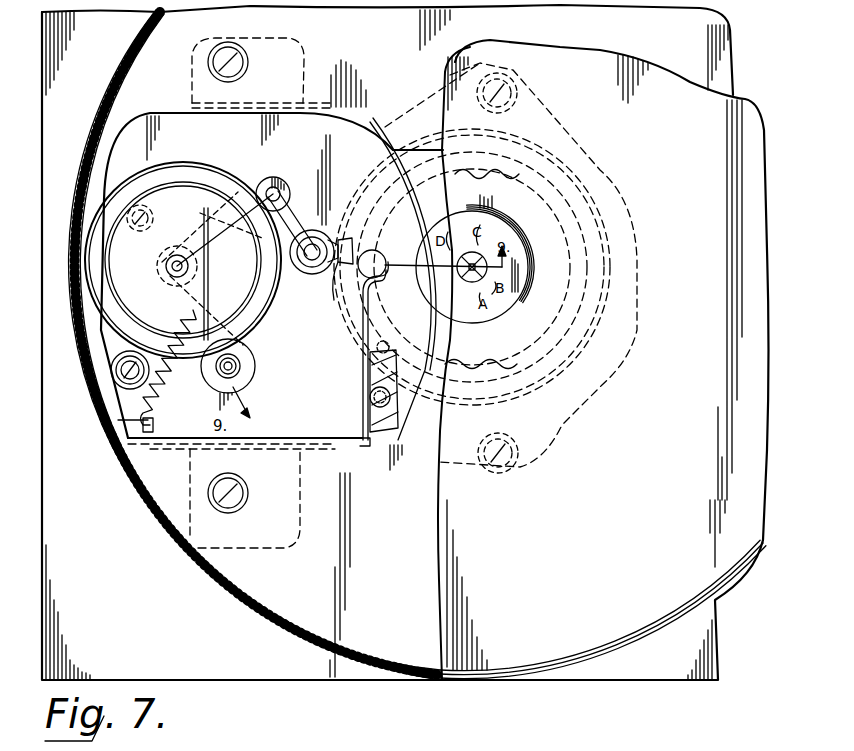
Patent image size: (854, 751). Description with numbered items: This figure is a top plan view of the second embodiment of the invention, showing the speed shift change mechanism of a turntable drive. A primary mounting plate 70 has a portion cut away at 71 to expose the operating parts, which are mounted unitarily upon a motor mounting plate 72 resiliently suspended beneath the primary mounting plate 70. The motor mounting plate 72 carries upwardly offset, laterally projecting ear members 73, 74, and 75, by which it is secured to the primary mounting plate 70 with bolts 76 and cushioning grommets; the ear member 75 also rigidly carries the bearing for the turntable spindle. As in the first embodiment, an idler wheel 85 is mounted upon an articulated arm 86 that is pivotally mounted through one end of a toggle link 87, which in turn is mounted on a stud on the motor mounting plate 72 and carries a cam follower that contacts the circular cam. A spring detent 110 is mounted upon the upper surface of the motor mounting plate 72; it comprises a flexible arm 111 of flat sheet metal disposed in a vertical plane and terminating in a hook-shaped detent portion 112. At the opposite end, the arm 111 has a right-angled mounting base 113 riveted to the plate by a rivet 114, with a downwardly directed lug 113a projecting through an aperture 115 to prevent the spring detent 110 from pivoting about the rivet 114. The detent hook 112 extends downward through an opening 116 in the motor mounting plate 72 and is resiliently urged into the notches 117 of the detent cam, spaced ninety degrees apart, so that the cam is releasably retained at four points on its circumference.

The primary mounting plate 70 is at (218, 672).
The cut away portion 71 is at (308, 440).
The motor mounting plate 72 is at (171, 130).
The ear member 73 is at (300, 50).
The ear member 74 is at (292, 543).
The ear member 75 is at (628, 218).
The bolt 76 is at (232, 513).
The idler wheel 85 is at (183, 293).
The articulated arm 86 is at (254, 185).
The toggle link 87 is at (240, 368).
The spring detent 110 is at (358, 378).
The flexible arm 111 is at (362, 302).
The detent hook 112 is at (352, 243).
The mounting base 113 is at (397, 345).
The lug 113a is at (385, 340).
The rivet 114 is at (372, 400).
The aperture 115 is at (430, 268).
The opening 116 is at (343, 238).
The notches 117 is at (608, 253).